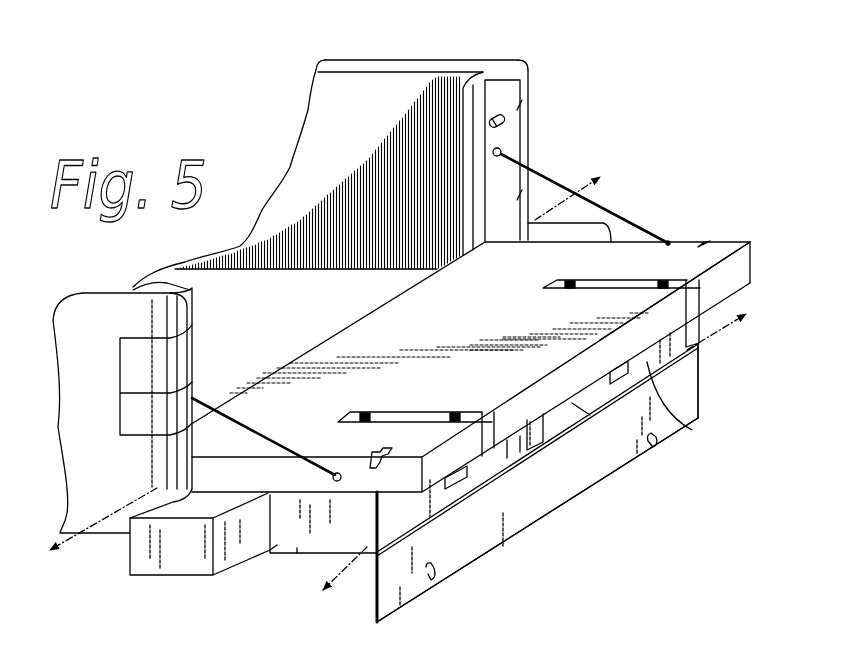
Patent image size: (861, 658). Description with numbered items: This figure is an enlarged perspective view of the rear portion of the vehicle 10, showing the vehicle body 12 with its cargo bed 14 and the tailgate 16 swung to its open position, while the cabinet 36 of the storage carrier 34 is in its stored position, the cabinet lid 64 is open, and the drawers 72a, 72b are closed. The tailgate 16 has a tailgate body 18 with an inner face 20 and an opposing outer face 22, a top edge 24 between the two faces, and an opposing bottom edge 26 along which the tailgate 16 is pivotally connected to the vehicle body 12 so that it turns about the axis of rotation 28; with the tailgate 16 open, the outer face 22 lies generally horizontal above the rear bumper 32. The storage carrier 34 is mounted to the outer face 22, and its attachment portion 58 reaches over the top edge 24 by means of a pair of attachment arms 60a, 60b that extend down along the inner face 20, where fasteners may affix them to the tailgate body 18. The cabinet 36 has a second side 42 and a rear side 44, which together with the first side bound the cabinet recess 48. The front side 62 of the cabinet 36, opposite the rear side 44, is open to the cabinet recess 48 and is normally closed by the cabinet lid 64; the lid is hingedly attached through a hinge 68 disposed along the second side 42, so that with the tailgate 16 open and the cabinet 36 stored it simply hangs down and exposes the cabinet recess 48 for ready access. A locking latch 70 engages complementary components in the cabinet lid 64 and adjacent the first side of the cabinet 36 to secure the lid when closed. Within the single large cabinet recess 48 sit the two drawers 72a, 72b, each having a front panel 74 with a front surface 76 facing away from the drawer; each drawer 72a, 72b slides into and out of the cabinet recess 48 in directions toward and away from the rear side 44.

The vehicle 10 is at (352, 60).
The vehicle body 12 is at (402, 63).
The cargo bed 14 is at (255, 130).
The tailgate 16 is at (688, 247).
The tailgate body 18 is at (649, 253).
The inner face 20 is at (657, 250).
The outer face 22 is at (330, 502).
The top edge 24 is at (748, 267).
The bottom edge 26 is at (333, 332).
The axis of rotation 28 is at (97, 523).
The rear bumper 32 is at (157, 552).
The storage carrier 34 is at (277, 545).
The cabinet 36 is at (297, 548).
The second side 42 is at (348, 560).
The rear side 44 is at (267, 532).
The cabinet recess 48 is at (556, 448).
The attachment portion 58 is at (519, 363).
The attachment arm 60a is at (393, 413).
The attachment arm 60b is at (575, 283).
The front side 62 is at (722, 388).
The cabinet lid 64 is at (697, 411).
The hinge 68 is at (440, 517).
The locking latch 70 is at (658, 444).
The drawer 72a is at (508, 443).
The drawer 72b is at (683, 343).
The front panel 74 is at (572, 403).
The front surface 76 is at (678, 398).